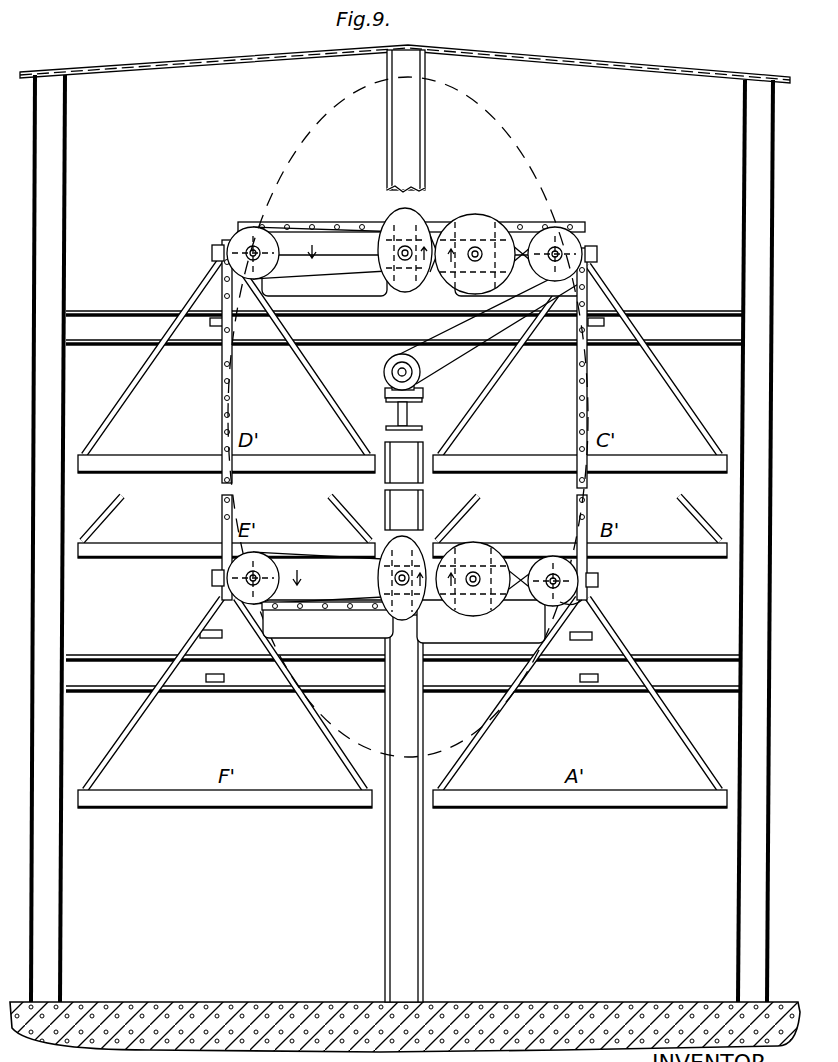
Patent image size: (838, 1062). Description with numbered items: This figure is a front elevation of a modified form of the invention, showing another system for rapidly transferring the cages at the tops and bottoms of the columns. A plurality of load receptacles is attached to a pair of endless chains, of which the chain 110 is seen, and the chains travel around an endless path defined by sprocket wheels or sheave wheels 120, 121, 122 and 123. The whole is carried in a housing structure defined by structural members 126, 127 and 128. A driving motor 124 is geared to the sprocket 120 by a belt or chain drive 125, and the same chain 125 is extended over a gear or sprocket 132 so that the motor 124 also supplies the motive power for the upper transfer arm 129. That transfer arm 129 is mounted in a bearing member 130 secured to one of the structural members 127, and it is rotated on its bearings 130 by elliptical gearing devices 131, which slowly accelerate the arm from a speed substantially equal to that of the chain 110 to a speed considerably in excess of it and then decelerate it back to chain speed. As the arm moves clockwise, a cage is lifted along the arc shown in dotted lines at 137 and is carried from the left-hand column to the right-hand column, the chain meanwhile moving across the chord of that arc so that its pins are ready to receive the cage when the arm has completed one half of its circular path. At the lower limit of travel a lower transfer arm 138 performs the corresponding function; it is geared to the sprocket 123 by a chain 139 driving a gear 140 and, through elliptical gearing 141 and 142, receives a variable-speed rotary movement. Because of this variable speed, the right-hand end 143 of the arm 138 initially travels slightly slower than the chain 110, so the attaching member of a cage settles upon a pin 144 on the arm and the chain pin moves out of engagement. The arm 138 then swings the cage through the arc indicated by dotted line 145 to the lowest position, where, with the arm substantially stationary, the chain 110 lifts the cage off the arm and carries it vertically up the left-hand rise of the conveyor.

The endless chain 110 is at (585, 430).
The sprocket wheel 120 is at (574, 250).
The sprocket wheel 121 is at (255, 228).
The sprocket wheel 122 is at (222, 578).
The sprocket wheel 123 is at (576, 626).
The driving motor 124 is at (386, 364).
The belt or chain drive 125 is at (482, 340).
The structural member 126 is at (58, 190).
The structural member 127 is at (420, 65).
The structural member 128 is at (752, 143).
The transfer arm 129 is at (330, 262).
The bearing member 130 is at (396, 272).
The elliptical gearing devices 131 is at (522, 232).
The gear or sprocket 132 is at (466, 298).
The arc 137 is at (284, 134).
The lower transfer arm 138 is at (326, 596).
The chain 139 is at (538, 548).
The gear 140 is at (476, 620).
The elliptical gearing 141 is at (452, 606).
The elliptical gearing 142 is at (394, 626).
The right-hand end 143 is at (598, 582).
The pin 144 is at (584, 602).
The arc 145 is at (520, 706).